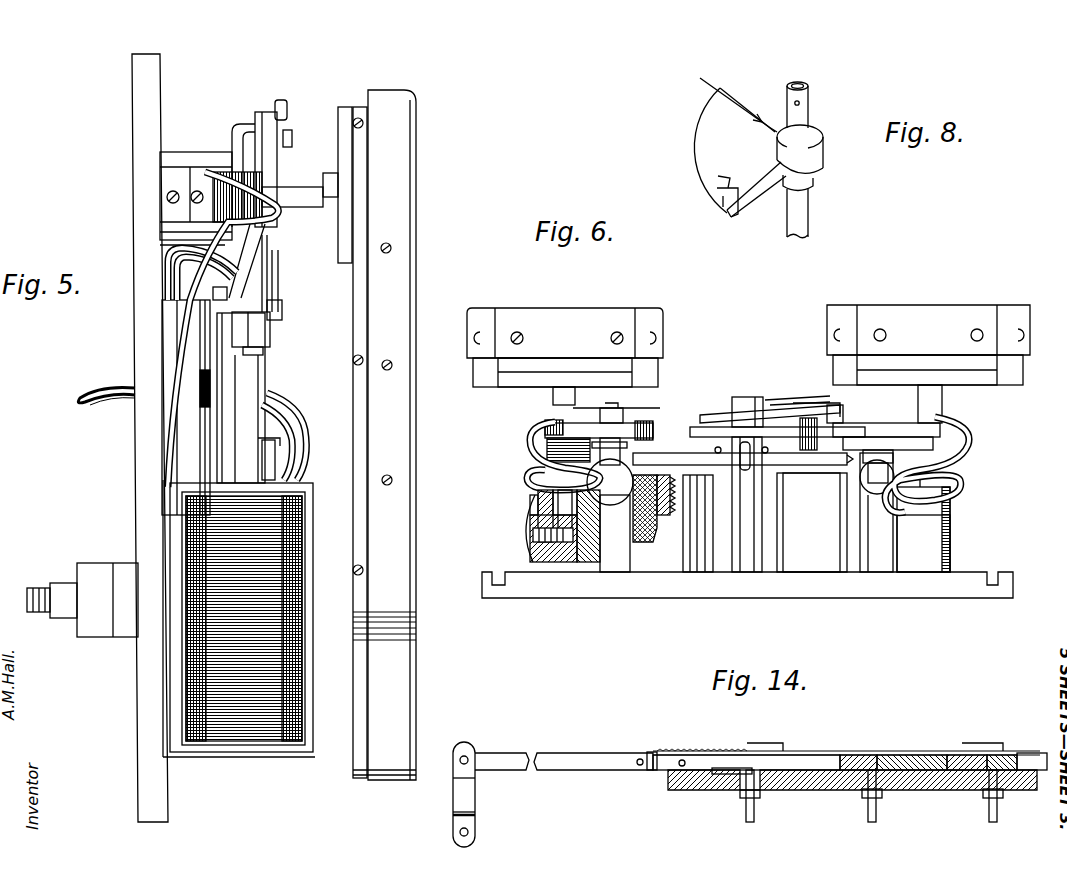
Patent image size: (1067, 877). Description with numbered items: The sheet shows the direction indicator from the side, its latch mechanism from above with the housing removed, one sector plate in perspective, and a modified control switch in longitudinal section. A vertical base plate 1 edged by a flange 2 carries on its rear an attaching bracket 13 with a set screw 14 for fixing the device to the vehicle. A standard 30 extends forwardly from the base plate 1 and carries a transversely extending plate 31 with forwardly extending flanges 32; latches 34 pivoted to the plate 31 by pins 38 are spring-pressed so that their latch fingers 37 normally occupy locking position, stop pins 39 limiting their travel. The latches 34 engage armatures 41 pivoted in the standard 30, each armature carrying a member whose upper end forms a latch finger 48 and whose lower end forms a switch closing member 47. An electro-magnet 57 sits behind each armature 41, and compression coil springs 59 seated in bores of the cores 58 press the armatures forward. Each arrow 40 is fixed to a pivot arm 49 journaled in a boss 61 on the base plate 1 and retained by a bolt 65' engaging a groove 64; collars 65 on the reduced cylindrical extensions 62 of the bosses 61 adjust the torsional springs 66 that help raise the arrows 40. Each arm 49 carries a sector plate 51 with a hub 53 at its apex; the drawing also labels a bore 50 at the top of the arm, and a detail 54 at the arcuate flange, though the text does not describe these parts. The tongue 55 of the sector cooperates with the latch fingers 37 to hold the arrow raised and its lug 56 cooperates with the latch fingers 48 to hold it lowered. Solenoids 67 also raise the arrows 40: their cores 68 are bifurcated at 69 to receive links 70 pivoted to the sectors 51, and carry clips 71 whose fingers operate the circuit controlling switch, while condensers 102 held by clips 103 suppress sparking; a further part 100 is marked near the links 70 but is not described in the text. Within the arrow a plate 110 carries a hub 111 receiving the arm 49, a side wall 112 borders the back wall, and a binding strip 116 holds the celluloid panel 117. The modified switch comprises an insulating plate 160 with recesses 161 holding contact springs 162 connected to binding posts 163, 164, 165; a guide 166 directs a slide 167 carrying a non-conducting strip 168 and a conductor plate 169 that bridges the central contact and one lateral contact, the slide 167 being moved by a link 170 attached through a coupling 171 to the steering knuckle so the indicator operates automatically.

In FIG. 5, the vertical base plate 1 is at (135, 345).
In FIG. 5, the flange 2 is at (145, 461).
In FIG. 6, the flange 2 is at (855, 598).
In FIG. 5, the attaching bracket 13 is at (99, 570).
In FIG. 5, the set screw 14 is at (35, 586).
In FIG. 6, the standard 30 is at (788, 504).
In FIG. 6, the transversely extending plate 31 is at (768, 408).
In FIG. 6, the forwardly extending flanges 32 is at (808, 392).
In FIG. 6, the latches 34 is at (735, 400).
In FIG. 6, the latch fingers 37 is at (678, 414).
In FIG. 6, the pins 38 is at (745, 465).
In FIG. 6, the stop pins 39 is at (747, 440).
In FIG. 5, the arrows 40 is at (426, 151).
In FIG. 6, the armatures 41 is at (732, 470).
In FIG. 5, the switch closing members 47 is at (278, 248).
In FIG. 6, the latch finger 48 is at (735, 413).
In FIG. 5, the pivot arms 49 is at (278, 222).
In FIG. 8, the pivot arms 49 is at (790, 227).
In FIG. 6, the pivot arms 49 is at (565, 508).
In FIG. 8, the bore 50 is at (797, 83).
In FIG. 5, the sector plate 51 is at (266, 112).
In FIG. 8, the sector plate 51 is at (705, 114).
In FIG. 6, the sector plate 51 is at (640, 423).
In FIG. 8, the hubs 53 is at (700, 143).
In FIG. 8, the groove 54 is at (718, 176).
In FIG. 5, the tongue 55 is at (287, 108).
In FIG. 8, the tongue 55 is at (718, 197).
In FIG. 6, the tongue 55 is at (548, 420).
In FIG. 8, the lug 56 is at (729, 97).
In FIG. 6, the electro-magnet 57 is at (668, 598).
In FIG. 6, the cores 58 is at (679, 528).
In FIG. 6, the compression coil springs 59 is at (660, 522).
In FIG. 6, the bosses 61 is at (955, 543).
In FIG. 6, the reduced cylindrical extensions 62 is at (530, 478).
In FIG. 6, the grooves 64 is at (555, 575).
In FIG. 6, the rings or collars 65 is at (504, 495).
In FIG. 6, the bolts 65' is at (519, 532).
In FIG. 6, the torsional springs 66 is at (547, 442).
In FIG. 5, the solenoids 67 is at (248, 740).
In FIG. 5, the cores 68 is at (252, 373).
In FIG. 5, the bifurcated end 69 is at (264, 351).
In FIG. 5, the links 70 is at (270, 270).
In FIG. 6, the links 70 is at (612, 490).
In FIG. 5, the clips 71 is at (272, 320).
In FIG. 5, the link 100 is at (280, 285).
In FIG. 5, the condensers 102 is at (170, 318).
In FIG. 5, the clips 103 is at (160, 382).
In FIG. 5, the plate 110 is at (345, 115).
In FIG. 5, the hub 111 is at (334, 176).
In FIG. 5, the side wall 112 is at (355, 762).
In FIG. 5, the binding strip 116 is at (386, 208).
In FIG. 5, the celluloid panel 117 is at (417, 628).
In FIG. 14, the insulating plate 160 is at (812, 791).
In FIG. 14, the recesses 161 is at (700, 790).
In FIG. 14, the contact springs 162 is at (720, 755).
In FIG. 14, the binding post 163 is at (878, 815).
In FIG. 14, the binding post 164 is at (744, 808).
In FIG. 14, the binding post 165 is at (999, 815).
In FIG. 14, the guide 166 is at (858, 755).
In FIG. 14, the slide 167 is at (653, 752).
In FIG. 14, the non-conducting strip 168 is at (935, 755).
In FIG. 14, the conductor plate 169 is at (975, 755).
In FIG. 14, the link 170 is at (555, 752).
In FIG. 14, the coupling 171 is at (452, 800).